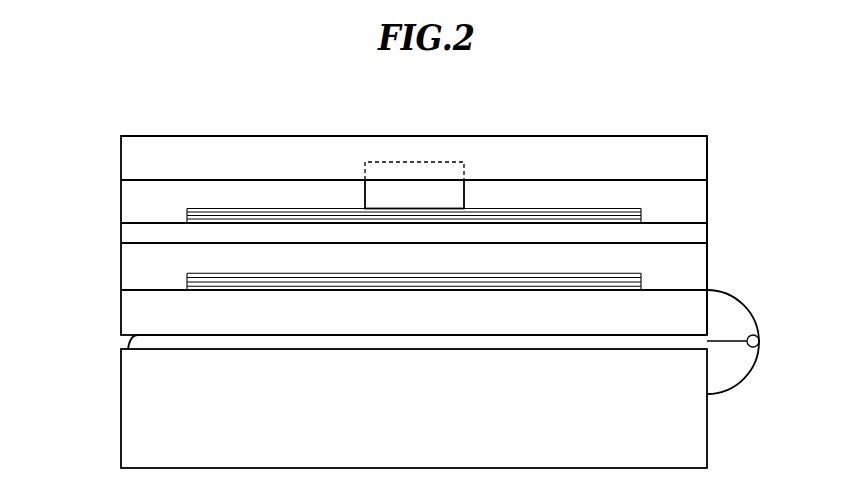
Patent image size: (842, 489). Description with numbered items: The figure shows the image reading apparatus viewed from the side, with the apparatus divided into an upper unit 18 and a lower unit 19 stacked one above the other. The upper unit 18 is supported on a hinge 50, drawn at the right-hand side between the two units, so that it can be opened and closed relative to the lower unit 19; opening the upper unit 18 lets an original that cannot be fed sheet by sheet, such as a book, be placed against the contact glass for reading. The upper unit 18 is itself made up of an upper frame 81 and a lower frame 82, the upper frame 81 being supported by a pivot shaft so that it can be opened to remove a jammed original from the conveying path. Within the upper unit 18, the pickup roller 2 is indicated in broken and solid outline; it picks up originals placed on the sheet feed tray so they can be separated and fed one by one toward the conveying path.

The pickup roller 2 is at (414, 193).
The upper unit 18 is at (110, 325).
The lower unit 19 is at (121, 413).
The hinge 50 is at (753, 318).
The upper frame 81 is at (633, 136).
The lower frame 82 is at (706, 210).